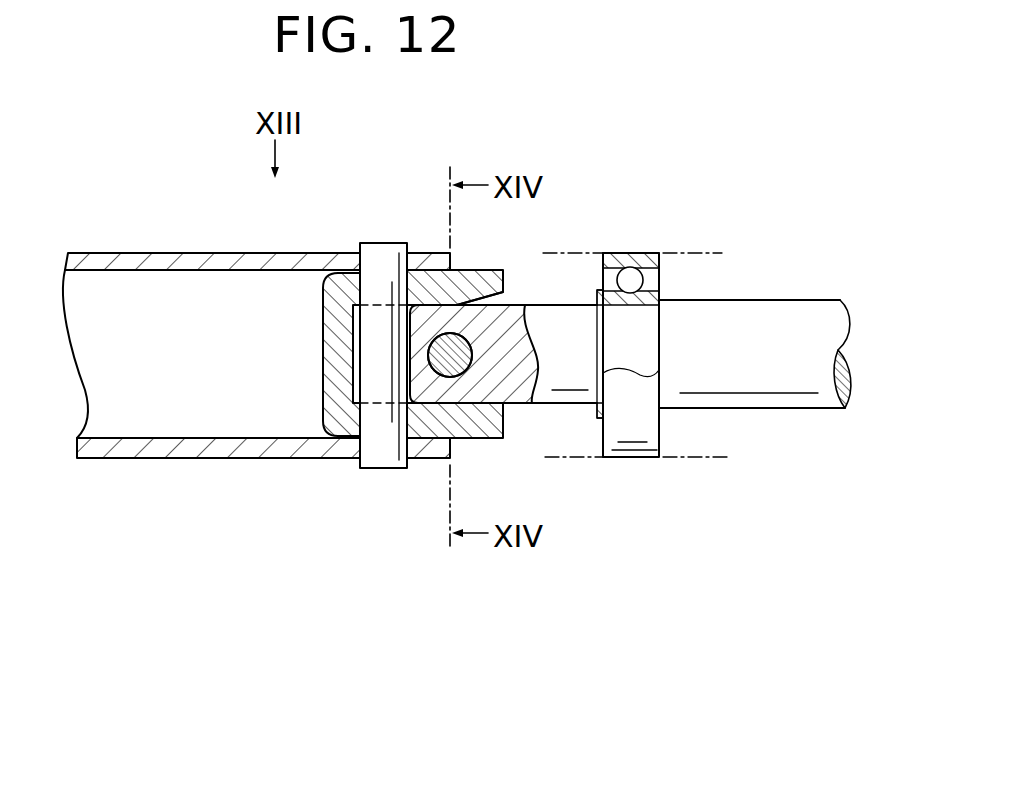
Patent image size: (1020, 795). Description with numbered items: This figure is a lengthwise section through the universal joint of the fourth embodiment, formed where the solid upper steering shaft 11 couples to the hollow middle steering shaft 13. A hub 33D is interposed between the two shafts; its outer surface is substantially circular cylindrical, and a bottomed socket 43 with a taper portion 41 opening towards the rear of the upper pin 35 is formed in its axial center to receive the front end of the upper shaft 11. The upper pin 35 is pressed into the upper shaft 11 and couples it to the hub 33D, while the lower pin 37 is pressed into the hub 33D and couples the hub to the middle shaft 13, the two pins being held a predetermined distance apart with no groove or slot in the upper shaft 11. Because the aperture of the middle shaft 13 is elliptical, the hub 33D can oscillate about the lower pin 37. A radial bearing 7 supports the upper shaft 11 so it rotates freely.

The middle steering shaft 13 is at (140, 253).
The hub 33D is at (312, 402).
The lower pin 37 is at (378, 243).
The taper portion 41 is at (487, 270).
The bottomed socket 43 is at (490, 297).
The upper pin 35 is at (470, 373).
The upper steering shaft 11 is at (768, 300).
The radial bearing 7 is at (632, 440).